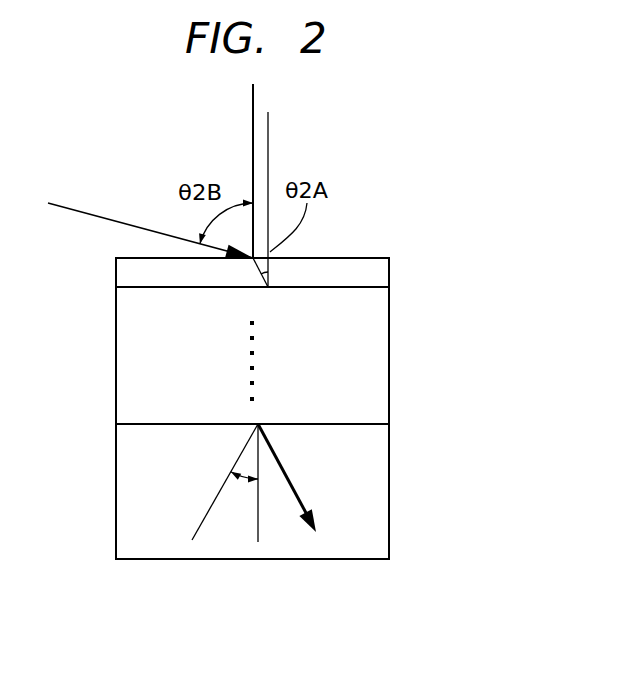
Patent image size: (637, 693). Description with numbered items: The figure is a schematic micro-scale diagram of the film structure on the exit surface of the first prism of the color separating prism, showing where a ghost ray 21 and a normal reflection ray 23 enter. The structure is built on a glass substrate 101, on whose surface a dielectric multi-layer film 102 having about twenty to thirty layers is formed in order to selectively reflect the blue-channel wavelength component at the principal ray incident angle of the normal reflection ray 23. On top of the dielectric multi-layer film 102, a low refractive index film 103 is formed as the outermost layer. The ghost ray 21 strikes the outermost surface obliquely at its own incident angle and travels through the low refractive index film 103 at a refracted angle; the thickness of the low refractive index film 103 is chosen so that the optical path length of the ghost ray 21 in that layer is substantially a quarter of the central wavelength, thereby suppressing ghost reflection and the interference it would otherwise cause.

The ghost ray 21 is at (99, 217).
The normal reflection ray 23 is at (221, 494).
The glass substrate 101 is at (389, 489).
The dielectric multi-layer film 102 is at (403, 288).
The low refractive index film 103 is at (402, 259).